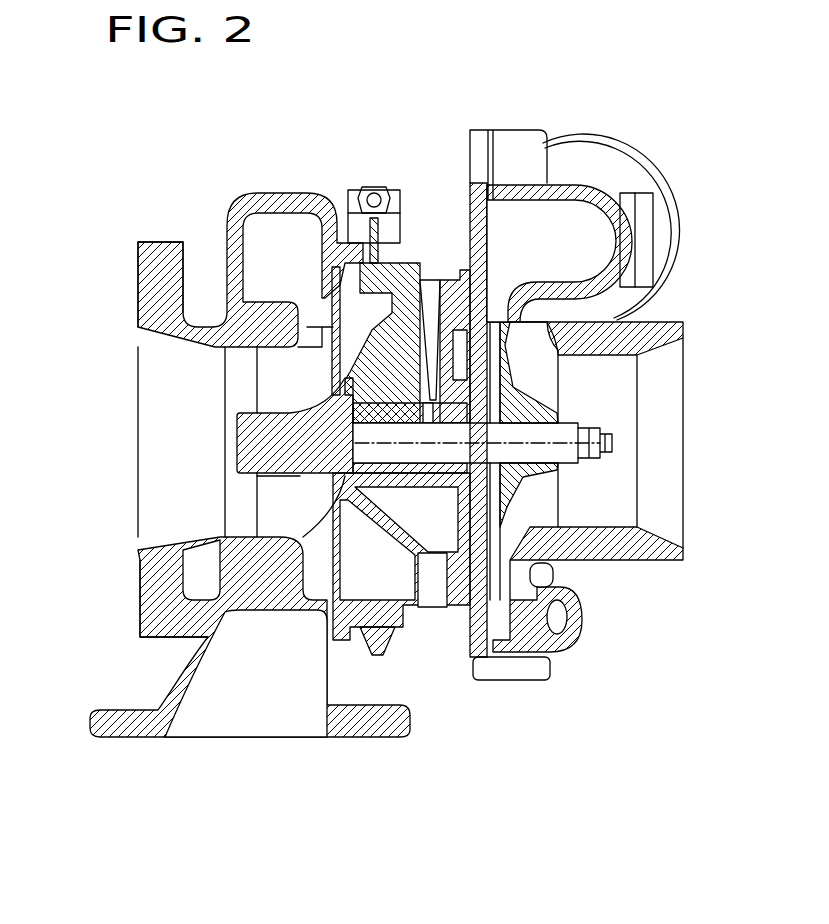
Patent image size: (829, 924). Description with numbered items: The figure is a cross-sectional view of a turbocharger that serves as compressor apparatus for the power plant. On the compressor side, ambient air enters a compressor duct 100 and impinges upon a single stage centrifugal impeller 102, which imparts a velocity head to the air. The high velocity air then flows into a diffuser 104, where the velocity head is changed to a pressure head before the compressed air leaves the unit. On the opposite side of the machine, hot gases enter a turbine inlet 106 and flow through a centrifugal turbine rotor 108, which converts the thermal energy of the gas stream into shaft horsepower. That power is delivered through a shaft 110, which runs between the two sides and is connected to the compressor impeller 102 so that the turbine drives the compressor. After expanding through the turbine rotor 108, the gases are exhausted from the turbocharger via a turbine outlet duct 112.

The compressor duct 100 is at (663, 535).
The single stage centrifugal impeller 102 is at (547, 502).
The diffuser 104 is at (585, 213).
The turbine inlet 106 is at (250, 712).
The centrifugal turbine rotor 108 is at (268, 373).
The shaft 110 is at (393, 413).
The turbine outlet duct 112 is at (172, 545).